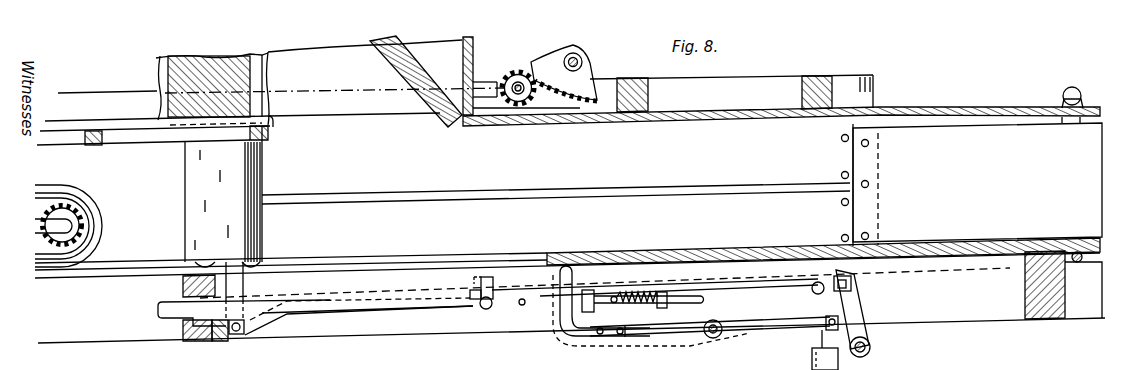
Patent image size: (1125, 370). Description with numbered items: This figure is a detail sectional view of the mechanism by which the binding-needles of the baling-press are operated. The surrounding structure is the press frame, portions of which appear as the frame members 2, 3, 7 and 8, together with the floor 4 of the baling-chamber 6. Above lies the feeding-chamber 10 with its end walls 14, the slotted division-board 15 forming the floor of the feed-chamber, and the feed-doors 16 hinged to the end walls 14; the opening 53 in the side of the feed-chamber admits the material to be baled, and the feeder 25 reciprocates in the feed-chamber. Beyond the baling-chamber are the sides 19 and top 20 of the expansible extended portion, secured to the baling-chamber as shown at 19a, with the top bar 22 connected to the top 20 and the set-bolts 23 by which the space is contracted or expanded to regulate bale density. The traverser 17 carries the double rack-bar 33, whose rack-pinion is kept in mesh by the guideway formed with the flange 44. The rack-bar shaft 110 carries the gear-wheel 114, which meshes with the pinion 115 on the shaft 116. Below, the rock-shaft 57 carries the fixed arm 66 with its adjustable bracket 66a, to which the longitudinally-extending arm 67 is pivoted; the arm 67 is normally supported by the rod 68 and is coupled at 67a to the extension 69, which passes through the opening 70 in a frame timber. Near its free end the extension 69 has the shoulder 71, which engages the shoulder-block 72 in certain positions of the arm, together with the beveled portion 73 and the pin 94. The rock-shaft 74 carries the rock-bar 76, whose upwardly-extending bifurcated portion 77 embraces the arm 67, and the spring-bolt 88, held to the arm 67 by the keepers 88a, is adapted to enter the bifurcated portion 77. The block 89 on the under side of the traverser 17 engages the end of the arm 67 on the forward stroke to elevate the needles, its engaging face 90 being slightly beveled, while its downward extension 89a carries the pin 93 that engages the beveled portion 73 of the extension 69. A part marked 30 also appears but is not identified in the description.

The frame 2 is at (1024, 293).
The frame 3 is at (570, 298).
The floor 4 is at (590, 257).
The baling-chamber 6 is at (556, 194).
The frame 7 is at (459, 98).
The frame 8 is at (828, 73).
The feeding-chamber 10 is at (335, 78).
The end walls 14 is at (474, 46).
The slotted division-board 15 is at (155, 130).
The feed-doors 16 is at (418, 68).
The traverser 17 is at (202, 204).
The sides 19 is at (972, 184).
The securing point of sides 19a is at (869, 189).
The top 20 is at (781, 108).
The top bar 22 is at (1060, 104).
The set-bolts 23 is at (1063, 94).
The feeder 25 is at (222, 60).
The arm 30 is at (825, 350).
The double rack-bar 33 is at (80, 212).
The flange 44 is at (103, 213).
The opening 53 is at (107, 82).
The rock-shaft 57 is at (871, 350).
The arm 66 is at (856, 314).
The adjustable bracket 66a is at (853, 282).
The longitudinally-extending arm 67 is at (760, 292).
The coupling 67a is at (480, 302).
The rod 68 is at (522, 306).
The extension 69 is at (392, 312).
The opening 70 is at (183, 291).
The shoulder 71 is at (190, 319).
The shoulder-block 72 is at (214, 337).
The beveled portion 73 is at (262, 322).
The rock-shaft 74 is at (713, 339).
The rock-bar 76 is at (752, 335).
The bifurcated portion 77 is at (558, 329).
The spring-bolt 88 is at (649, 309).
The keepers 88a is at (599, 308).
The block 89 is at (236, 291).
The downward extension 89a is at (252, 328).
The engaging face 90 is at (246, 296).
The pin 93 is at (246, 332).
The pin 94 is at (182, 341).
The shaft 110 is at (583, 62).
The gear-wheel 114 is at (564, 73).
The pinion 115 is at (537, 56).
The shaft 116 is at (507, 95).